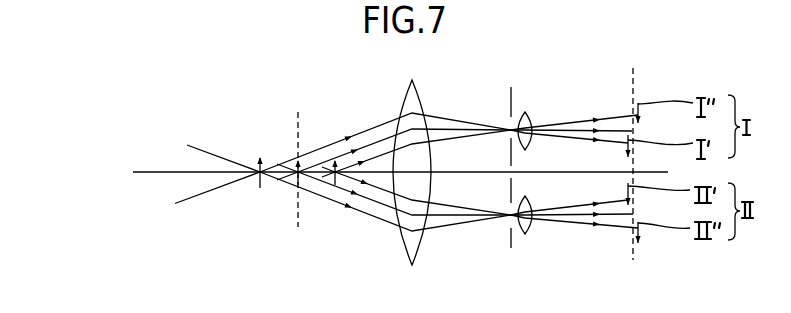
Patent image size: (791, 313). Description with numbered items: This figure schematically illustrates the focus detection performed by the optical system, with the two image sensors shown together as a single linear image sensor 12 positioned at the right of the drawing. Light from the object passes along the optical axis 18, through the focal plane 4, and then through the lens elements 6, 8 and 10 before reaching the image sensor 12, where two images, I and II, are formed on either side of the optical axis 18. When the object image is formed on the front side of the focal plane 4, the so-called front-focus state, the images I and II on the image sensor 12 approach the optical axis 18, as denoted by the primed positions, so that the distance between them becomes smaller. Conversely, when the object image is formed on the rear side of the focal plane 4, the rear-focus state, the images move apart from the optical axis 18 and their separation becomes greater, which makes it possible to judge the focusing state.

The focal plane 4 is at (297, 225).
The collimating lens 6 is at (412, 262).
The first imaging lens 8 is at (525, 112).
The second imaging lens 10 is at (525, 234).
The linear image sensor 12 is at (633, 84).
The optical axis 18 is at (152, 173).